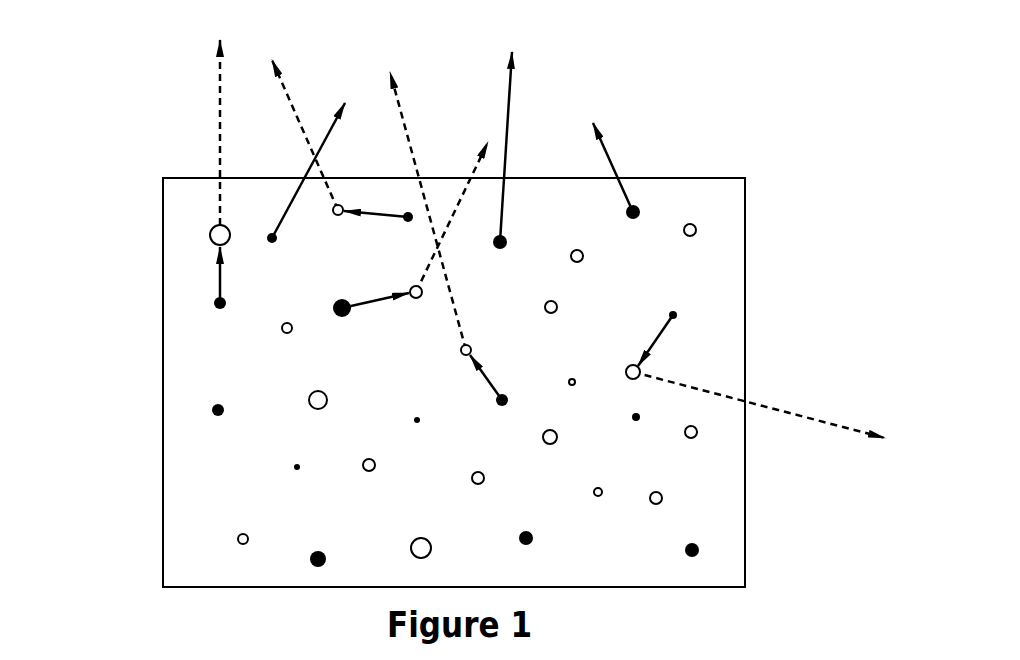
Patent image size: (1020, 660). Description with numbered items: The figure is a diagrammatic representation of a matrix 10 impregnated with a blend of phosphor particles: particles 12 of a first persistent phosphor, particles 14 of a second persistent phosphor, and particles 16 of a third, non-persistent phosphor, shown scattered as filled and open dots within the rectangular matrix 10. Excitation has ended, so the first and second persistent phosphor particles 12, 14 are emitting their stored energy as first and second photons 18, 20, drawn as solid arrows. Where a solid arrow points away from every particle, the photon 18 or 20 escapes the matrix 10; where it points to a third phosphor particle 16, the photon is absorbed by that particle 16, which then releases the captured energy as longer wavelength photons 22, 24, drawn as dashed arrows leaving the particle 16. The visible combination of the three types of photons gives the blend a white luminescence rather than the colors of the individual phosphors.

The matrix 10 is at (720, 265).
The particles of the first persistent phosphor 12 is at (213, 303).
The particles of the second persistent phosphor 14 is at (212, 410).
The particles of the third non-persistent phosphor 16 is at (210, 235).
The first photons 18 is at (217, 275).
The second photons 20 is at (322, 140).
The longer wavelength photons 22 is at (220, 128).
The longer wavelength photons 24 is at (298, 118).